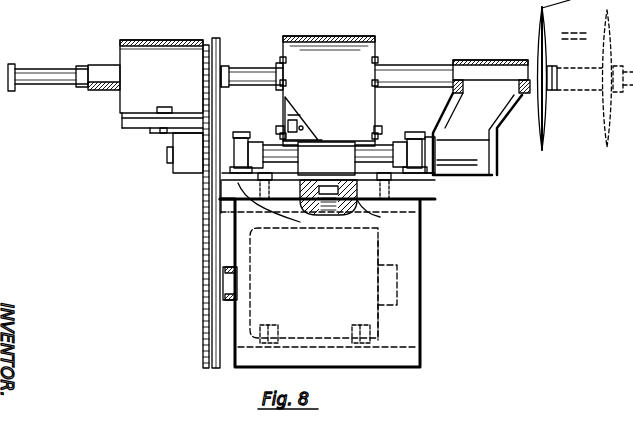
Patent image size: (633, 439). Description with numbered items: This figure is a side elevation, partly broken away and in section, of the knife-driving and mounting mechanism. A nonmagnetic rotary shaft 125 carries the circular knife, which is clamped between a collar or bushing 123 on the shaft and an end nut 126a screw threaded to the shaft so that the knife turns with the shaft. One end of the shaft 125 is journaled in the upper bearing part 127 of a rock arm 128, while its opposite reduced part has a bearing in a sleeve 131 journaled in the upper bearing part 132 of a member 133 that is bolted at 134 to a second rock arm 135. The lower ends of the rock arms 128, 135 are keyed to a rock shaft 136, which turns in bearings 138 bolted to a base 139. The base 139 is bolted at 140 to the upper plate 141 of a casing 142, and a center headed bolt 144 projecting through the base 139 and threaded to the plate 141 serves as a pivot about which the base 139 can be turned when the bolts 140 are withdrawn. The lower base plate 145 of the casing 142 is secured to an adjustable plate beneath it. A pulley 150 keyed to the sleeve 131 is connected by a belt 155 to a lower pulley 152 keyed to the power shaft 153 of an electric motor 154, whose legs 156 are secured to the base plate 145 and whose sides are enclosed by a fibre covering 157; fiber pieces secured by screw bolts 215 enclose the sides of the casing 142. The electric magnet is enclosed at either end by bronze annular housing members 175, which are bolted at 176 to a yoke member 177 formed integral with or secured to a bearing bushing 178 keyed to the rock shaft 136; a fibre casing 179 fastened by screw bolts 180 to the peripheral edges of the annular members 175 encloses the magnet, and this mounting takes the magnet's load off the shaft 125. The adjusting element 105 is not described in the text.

The adjusting bolt 105 is at (10, 91).
The sleeve 131 is at (96, 68).
The upper bearing part 132 is at (135, 100).
The member 133 is at (122, 117).
The bolts 134 is at (158, 114).
The rock arm 135 is at (173, 168).
The pulley 150 is at (203, 57).
The lower pulley 152 is at (203, 337).
The housing annular members 175 is at (215, 43).
The belt 155 is at (208, 185).
The fibre casing 179 is at (337, 36).
The screw bolts 180 is at (377, 42).
The yoke member 177 is at (310, 130).
The rotary shaft 125 is at (435, 63).
The upper bearing part 127 is at (492, 59).
The rock arm 128 is at (507, 113).
The collar or bushing 123 is at (540, 57).
The nut 126a is at (552, 92).
The bearings 138 is at (242, 131).
The bolts 176 is at (274, 126).
The bearing bushing 178 is at (310, 162).
The base 139 is at (422, 190).
The bolts 140 is at (422, 208).
The upper plate 141 is at (358, 200).
The center headed bolt 144 is at (420, 226).
The lower base plate 145 is at (407, 355).
The casing 142 is at (237, 317).
The electric motor 154 is at (373, 275).
The screw bolts 215 is at (418, 256).
The fibre covering 157 is at (417, 296).
The legs 156 is at (360, 328).
The power shaft 153 is at (237, 285).
The rock shaft 136 is at (210, 207).